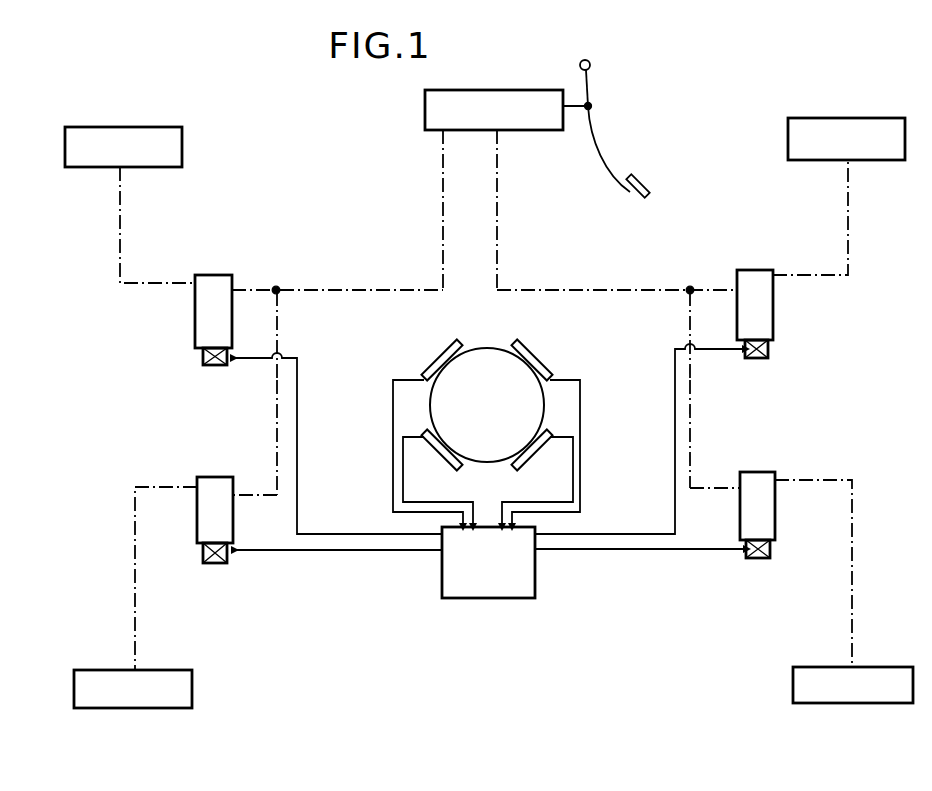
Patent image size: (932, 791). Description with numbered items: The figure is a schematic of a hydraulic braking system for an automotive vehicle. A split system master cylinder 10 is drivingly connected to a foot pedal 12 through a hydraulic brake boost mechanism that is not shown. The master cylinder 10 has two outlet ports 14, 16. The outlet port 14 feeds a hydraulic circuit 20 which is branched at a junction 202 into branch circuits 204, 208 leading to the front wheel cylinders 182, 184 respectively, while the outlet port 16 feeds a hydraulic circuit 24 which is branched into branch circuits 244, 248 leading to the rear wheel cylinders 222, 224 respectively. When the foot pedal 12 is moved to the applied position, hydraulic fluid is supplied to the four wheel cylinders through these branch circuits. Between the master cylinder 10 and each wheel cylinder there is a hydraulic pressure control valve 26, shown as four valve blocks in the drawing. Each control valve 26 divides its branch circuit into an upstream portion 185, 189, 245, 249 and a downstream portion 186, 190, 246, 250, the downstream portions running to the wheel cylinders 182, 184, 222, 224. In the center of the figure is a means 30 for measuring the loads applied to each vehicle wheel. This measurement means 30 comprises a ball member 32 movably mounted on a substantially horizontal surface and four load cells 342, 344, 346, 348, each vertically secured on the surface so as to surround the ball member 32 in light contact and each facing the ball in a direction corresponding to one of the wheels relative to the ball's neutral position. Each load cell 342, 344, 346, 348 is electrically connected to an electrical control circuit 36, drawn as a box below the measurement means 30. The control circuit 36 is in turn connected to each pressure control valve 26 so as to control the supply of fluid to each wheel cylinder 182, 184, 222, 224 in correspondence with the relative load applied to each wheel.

The split system master cylinder 10 is at (474, 122).
The foot pedal 12 is at (603, 150).
The outlet port 14 is at (440, 137).
The outlet port 16 is at (498, 134).
The hydraulic circuit 20 is at (355, 288).
The hydraulic circuit 24 is at (600, 288).
The hydraulic pressure control valve 26 is at (195, 310).
The means for measuring loads 30 is at (503, 348).
The ball member 32 is at (432, 405).
The electrical control circuit 36 is at (497, 600).
The front wheel cylinder 182 is at (103, 161).
The front wheel cylinder 184 is at (113, 702).
The upstream portion of branch circuit 185 is at (265, 297).
The downstream portion of branch circuit 186 is at (122, 246).
The upstream portion of branch circuit 189 is at (270, 497).
The downstream portion of branch circuit 190 is at (137, 601).
The junction 202 is at (277, 285).
The branch circuit 204 is at (245, 283).
The branch circuit 208 is at (274, 423).
The rear wheel cylinder 222 is at (826, 152).
The rear wheel cylinder 224 is at (833, 698).
The branch circuit 244 is at (700, 288).
The upstream portion of branch circuit 245 is at (722, 295).
The downstream portion of branch circuit 246 is at (848, 240).
The branch circuit 248 is at (694, 428).
The upstream portion of branch circuit 249 is at (690, 465).
The downstream portion of branch circuit 250 is at (853, 576).
The load cell 342 is at (437, 348).
The load cell 344 is at (441, 462).
The load cell 346 is at (549, 366).
The load cell 348 is at (535, 460).